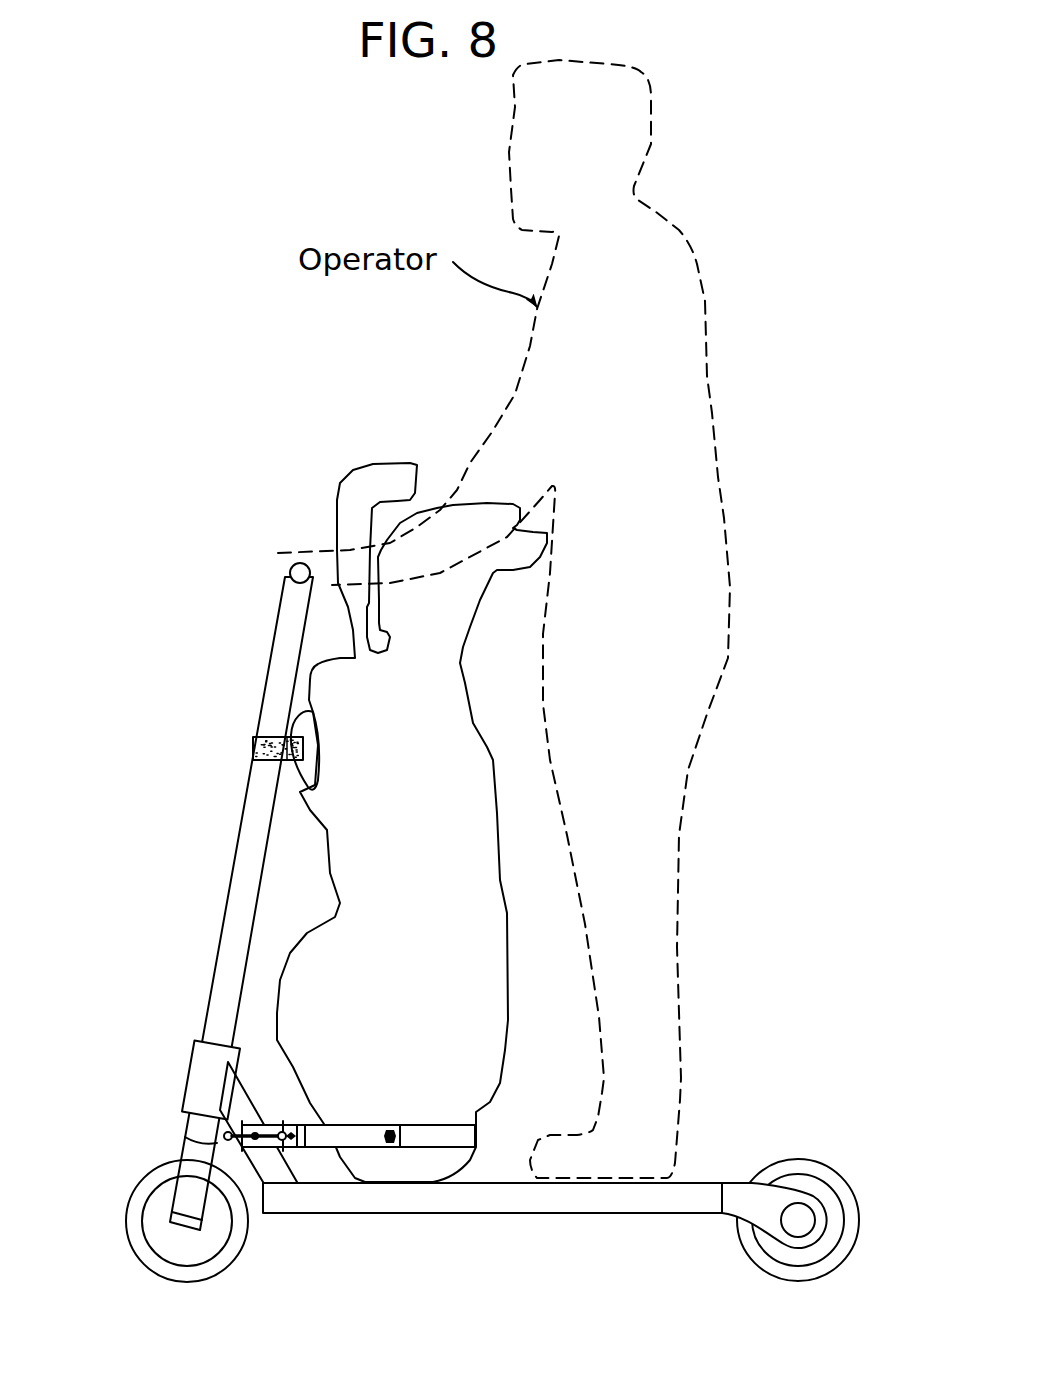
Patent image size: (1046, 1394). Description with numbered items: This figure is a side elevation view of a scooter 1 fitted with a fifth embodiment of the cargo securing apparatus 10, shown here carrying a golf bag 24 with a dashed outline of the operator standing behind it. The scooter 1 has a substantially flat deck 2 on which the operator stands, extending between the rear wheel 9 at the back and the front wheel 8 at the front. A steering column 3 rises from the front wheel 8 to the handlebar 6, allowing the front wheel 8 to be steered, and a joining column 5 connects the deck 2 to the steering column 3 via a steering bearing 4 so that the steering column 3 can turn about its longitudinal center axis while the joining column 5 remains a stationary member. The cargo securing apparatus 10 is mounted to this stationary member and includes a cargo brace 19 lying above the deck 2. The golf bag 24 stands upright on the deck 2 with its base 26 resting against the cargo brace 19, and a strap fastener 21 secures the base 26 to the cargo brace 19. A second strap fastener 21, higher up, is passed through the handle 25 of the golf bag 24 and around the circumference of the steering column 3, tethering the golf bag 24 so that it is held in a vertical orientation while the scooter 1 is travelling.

The scooter 1 is at (167, 462).
The deck 2 is at (518, 1188).
The steering column 3 is at (290, 640).
The steering bearing 4 is at (195, 1075).
The joining column 5 is at (268, 1159).
The handlebar 6 is at (287, 575).
The front wheel 8 is at (133, 1210).
The rear wheel 9 is at (758, 1258).
The cargo securing apparatus 10 is at (322, 1159).
The cargo brace 19 is at (364, 1134).
The strap fastener 21 is at (258, 746).
The golf bag 24 is at (363, 955).
The handle 25 is at (293, 770).
The base 26 is at (400, 1163).